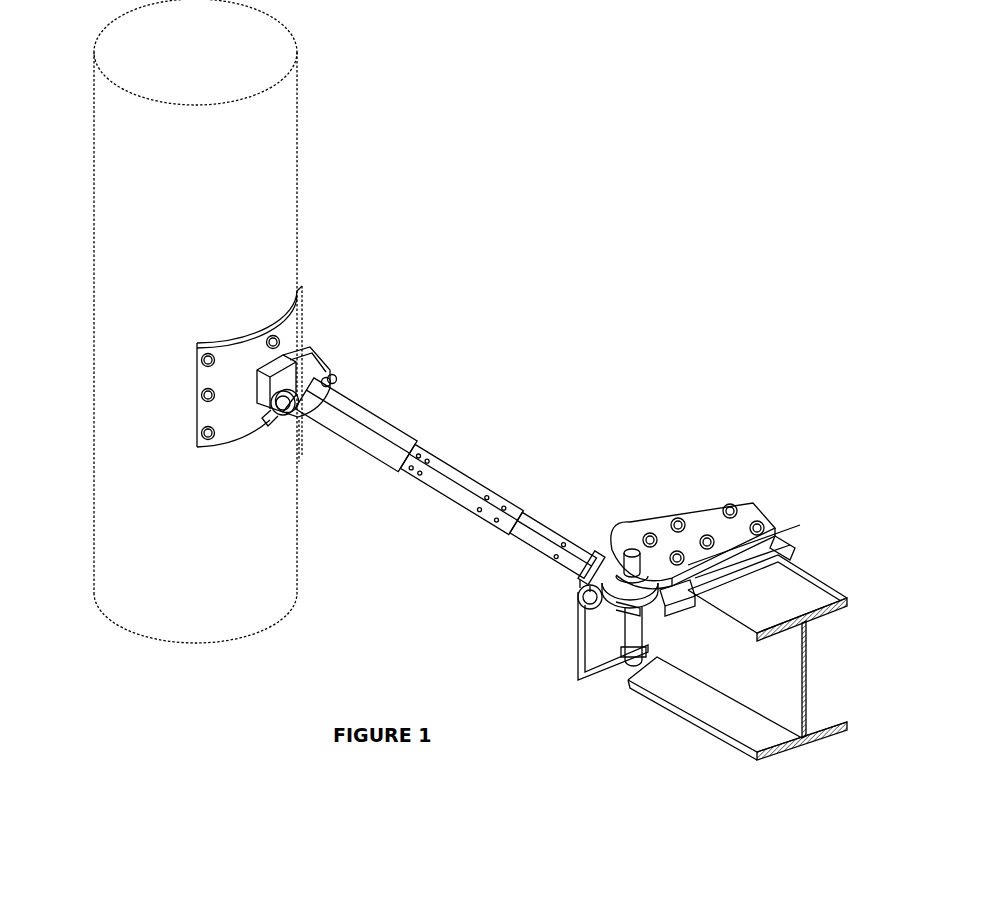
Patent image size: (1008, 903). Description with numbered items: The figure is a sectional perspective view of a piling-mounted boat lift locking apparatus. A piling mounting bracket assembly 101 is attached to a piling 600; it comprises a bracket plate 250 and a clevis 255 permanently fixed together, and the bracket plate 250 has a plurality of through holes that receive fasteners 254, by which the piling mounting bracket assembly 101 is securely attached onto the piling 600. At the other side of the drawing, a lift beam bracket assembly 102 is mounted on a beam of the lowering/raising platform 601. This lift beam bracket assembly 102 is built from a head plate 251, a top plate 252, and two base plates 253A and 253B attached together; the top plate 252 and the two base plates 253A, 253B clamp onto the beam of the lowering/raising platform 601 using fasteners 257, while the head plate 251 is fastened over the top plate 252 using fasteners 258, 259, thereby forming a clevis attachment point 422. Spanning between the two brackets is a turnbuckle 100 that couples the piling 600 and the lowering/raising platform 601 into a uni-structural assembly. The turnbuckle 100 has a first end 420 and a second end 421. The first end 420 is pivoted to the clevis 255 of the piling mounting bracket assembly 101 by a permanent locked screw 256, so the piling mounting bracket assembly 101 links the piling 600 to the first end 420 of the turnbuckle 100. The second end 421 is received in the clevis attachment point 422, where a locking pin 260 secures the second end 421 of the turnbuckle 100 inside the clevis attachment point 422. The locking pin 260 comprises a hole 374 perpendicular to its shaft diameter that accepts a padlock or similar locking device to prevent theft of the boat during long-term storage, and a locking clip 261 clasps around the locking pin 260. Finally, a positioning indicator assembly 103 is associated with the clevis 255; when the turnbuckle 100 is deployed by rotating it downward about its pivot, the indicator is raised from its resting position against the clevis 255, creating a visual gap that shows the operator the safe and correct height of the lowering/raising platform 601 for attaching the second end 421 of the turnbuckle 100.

The turnbuckle 100 is at (485, 485).
The piling mounting bracket assembly 101 is at (230, 360).
The lift beam bracket assembly 102 is at (717, 530).
The positioning indicator assembly 103 is at (295, 355).
The bracket plate 250 is at (200, 372).
The head plate 251 is at (783, 547).
The top plate 252 is at (770, 540).
The base plate 253A is at (778, 550).
The base plate 253B is at (675, 612).
The fasteners 254 is at (200, 396).
The clevis 255 is at (310, 378).
The permanent locked screw 256 is at (272, 407).
The fasteners 257 is at (736, 509).
The fasteners 258 is at (706, 536).
The fasteners 259 is at (676, 552).
The locking pin 260 is at (633, 640).
The locking clip 261 is at (585, 660).
The hole 374 is at (636, 653).
The first end 420 is at (336, 379).
The second end 421 is at (582, 593).
The clevis attachment point 422 is at (630, 612).
The piling 600 is at (288, 221).
The lowering/raising platform 601 is at (797, 590).